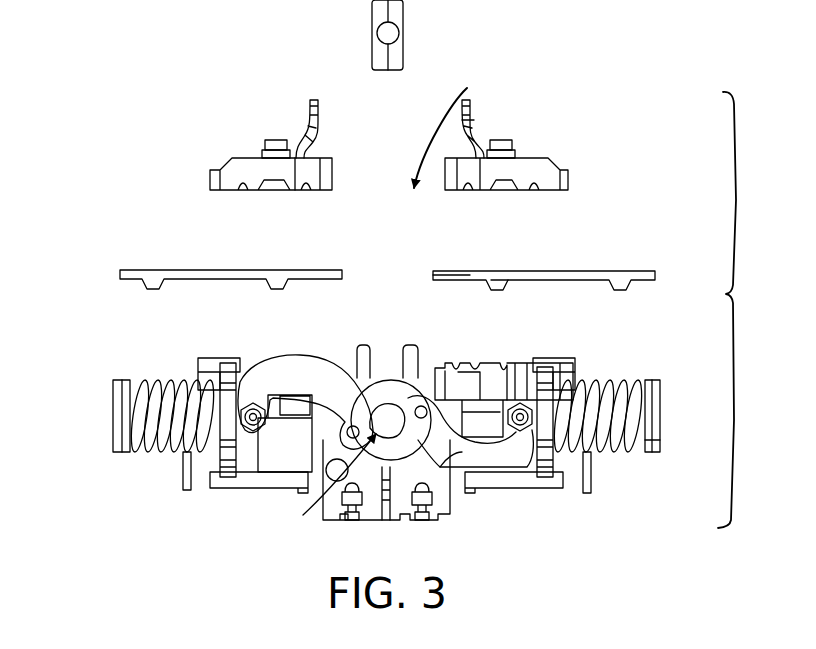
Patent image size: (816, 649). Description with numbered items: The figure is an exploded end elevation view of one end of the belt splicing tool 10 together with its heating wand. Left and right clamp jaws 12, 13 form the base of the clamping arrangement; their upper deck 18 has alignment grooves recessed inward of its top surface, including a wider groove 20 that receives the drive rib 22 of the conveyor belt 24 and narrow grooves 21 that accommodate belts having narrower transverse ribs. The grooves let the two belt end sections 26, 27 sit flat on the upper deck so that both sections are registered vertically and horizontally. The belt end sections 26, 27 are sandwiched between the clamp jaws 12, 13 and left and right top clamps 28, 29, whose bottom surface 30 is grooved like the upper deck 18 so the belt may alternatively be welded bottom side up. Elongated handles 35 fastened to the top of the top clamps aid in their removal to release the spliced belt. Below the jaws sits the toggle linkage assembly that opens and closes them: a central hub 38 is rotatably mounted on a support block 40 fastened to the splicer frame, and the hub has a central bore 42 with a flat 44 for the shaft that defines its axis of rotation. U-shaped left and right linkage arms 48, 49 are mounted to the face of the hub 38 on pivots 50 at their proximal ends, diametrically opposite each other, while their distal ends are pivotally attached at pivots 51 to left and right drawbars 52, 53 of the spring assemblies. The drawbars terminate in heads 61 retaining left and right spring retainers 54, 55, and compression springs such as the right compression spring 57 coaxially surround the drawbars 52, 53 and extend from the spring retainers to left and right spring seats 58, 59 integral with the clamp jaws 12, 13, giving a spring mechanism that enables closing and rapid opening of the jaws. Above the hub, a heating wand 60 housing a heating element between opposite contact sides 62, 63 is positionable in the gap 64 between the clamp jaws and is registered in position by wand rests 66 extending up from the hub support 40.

The tool 10 is at (738, 295).
The left clamp jaw 12 is at (203, 362).
The right clamp jaw 13 is at (572, 378).
The upper deck 18 is at (515, 356).
The wider groove 20 is at (500, 363).
The narrow grooves 21 is at (467, 352).
The transverse ribs 22 is at (508, 287).
The conveyor belt 24 is at (565, 272).
The belt end section 26 is at (237, 271).
The belt end section 27 is at (470, 272).
The left top clamp 28 is at (230, 165).
The right top clamp 29 is at (543, 170).
The bottom surface 30 is at (295, 190).
The elongated handles 35 is at (476, 120).
The central hub 38 is at (384, 380).
The support block 40 is at (443, 510).
The central bore 42 is at (326, 483).
The flat 44 is at (437, 490).
The left linkage arm 48 is at (310, 365).
The right linkage arm 49 is at (490, 473).
The pivots 50 is at (347, 434).
The pivots 51 is at (250, 431).
The left drawbar 52 is at (150, 450).
The right drawbar 53 is at (620, 445).
The left spring retainer 54 is at (128, 390).
The right spring retainer 55 is at (659, 448).
The right compression spring 57 is at (620, 390).
The left spring seat 58 is at (228, 477).
The right spring seat 59 is at (547, 477).
The heating wand 60 is at (396, 70).
The heads 61 is at (115, 425).
The contact side 62 is at (372, 25).
The contact side 63 is at (404, 33).
The gap 64 is at (453, 131).
The wand rests 66 is at (360, 348).